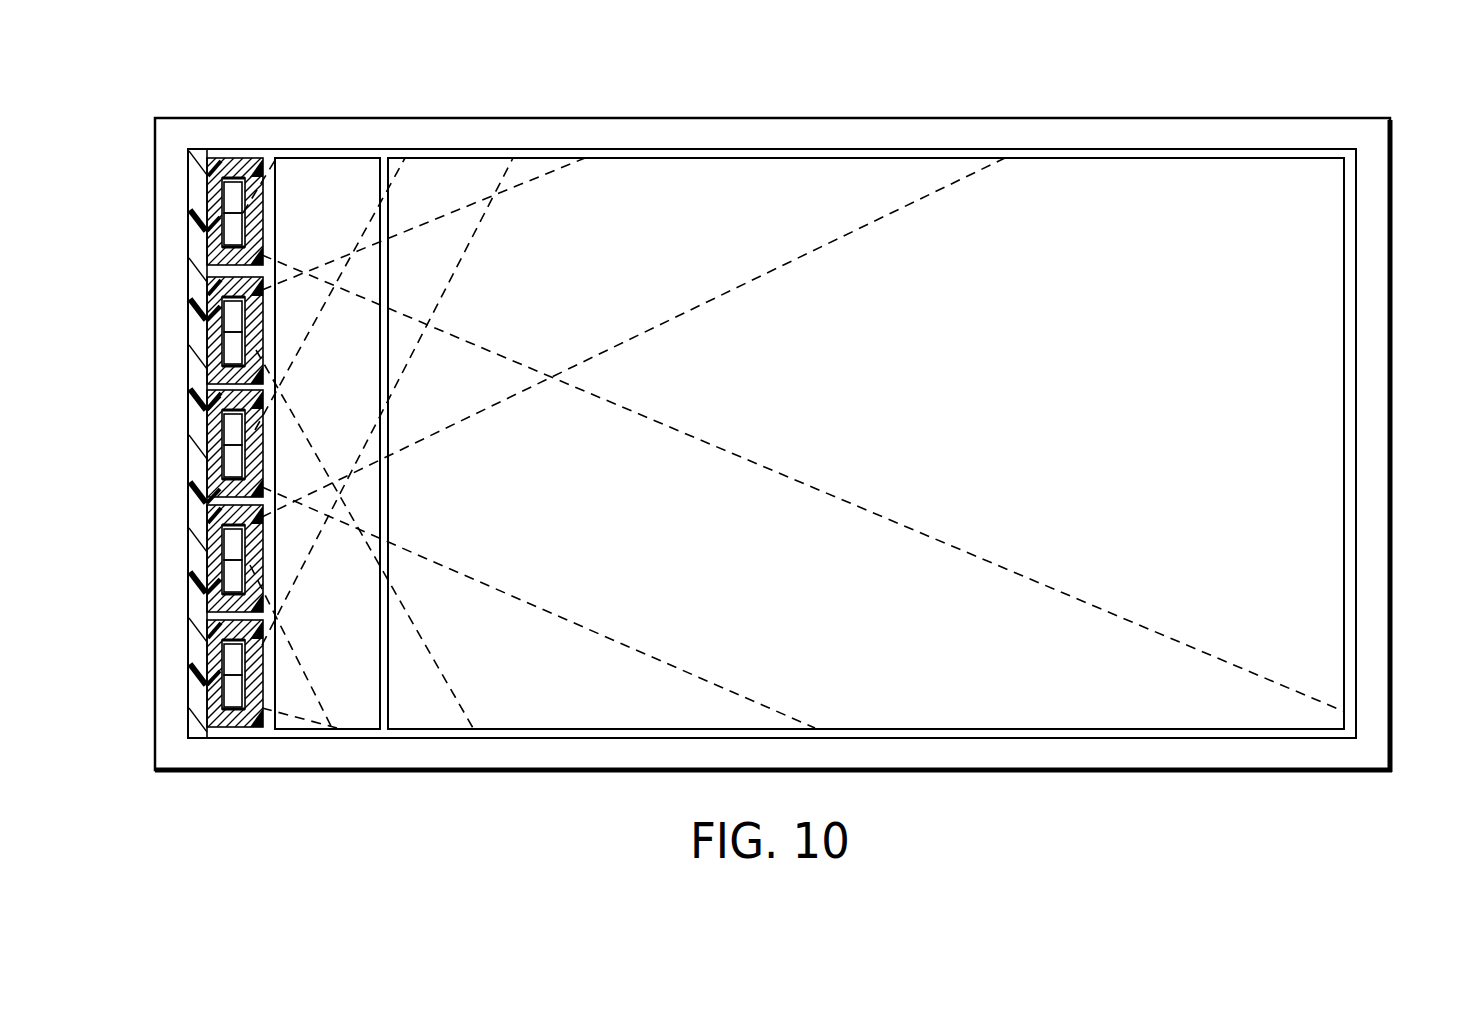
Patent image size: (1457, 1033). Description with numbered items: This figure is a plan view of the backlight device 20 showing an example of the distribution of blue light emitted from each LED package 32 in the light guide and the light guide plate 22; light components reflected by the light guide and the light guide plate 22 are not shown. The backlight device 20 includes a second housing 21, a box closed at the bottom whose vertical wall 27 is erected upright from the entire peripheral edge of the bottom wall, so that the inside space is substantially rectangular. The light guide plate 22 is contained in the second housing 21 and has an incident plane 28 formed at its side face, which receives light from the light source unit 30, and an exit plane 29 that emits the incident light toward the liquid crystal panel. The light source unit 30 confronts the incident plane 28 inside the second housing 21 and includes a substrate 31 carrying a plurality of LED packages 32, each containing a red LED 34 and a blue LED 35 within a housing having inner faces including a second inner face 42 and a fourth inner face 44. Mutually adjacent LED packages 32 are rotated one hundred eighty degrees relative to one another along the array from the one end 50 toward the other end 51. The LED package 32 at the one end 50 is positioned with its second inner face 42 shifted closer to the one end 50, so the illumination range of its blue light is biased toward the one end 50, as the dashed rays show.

The backlight device 20 is at (772, 393).
The second housing 21 is at (772, 386).
The light guide plate 22 is at (848, 442).
The vertical wall 27 is at (804, 446).
The incident plane 28 is at (329, 399).
The exit plane 29 is at (866, 394).
The light source unit 30 is at (234, 385).
The substrate 31 is at (180, 404).
The LED package 32 is at (234, 442).
The red LED 34 is at (284, 423).
The blue LED 35 is at (284, 459).
The second inner face 42 is at (155, 441).
The fourth inner face 44 is at (182, 449).
The one end 50 is at (234, 398).
The other end 51 is at (241, 783).